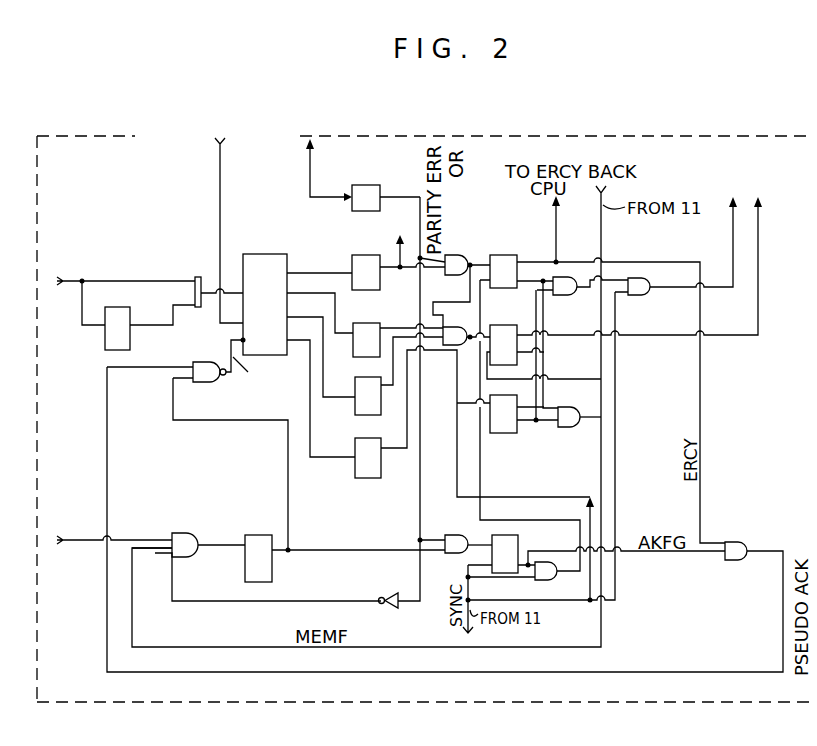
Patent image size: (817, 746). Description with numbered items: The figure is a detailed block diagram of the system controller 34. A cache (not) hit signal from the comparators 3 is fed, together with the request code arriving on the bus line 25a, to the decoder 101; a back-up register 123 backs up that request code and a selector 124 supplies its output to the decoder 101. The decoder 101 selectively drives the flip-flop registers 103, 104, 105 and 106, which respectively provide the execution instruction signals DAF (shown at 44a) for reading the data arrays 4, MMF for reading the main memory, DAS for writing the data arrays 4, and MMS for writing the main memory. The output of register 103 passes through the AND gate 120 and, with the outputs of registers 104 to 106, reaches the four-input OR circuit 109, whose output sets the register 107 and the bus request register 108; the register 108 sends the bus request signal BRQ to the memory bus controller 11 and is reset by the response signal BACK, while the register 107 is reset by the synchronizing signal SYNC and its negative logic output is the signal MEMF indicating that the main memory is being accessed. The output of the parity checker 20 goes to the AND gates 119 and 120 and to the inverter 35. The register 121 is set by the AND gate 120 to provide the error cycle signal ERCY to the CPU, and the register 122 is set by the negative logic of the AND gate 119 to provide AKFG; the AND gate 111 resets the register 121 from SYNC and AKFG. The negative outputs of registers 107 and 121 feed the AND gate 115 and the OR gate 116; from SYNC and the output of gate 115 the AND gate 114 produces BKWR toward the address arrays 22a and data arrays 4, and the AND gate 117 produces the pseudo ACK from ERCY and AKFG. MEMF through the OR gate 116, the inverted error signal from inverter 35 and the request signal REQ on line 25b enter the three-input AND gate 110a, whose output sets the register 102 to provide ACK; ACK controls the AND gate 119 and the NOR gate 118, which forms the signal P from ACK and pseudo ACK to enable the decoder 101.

The comparator 3 is at (219, 218).
The data array 4 is at (725, 221).
The memory bus controller 11 is at (777, 221).
The parity checker 20 is at (372, 185).
The memory write controller 22a is at (720, 171).
The bus line 25a is at (174, 281).
The request line 25b is at (130, 540).
The system controller 34 is at (766, 134).
The inverter 35 is at (388, 593).
The parity error output 44a is at (401, 232).
The decoder 101 is at (258, 254).
The register 102 is at (258, 535).
The register 103 is at (355, 256).
The register 104 is at (370, 323).
The register 105 is at (355, 402).
The register 106 is at (355, 470).
The register 107 is at (508, 433).
The bus request register 108 is at (545, 352).
The OR circuit 109 is at (450, 345).
The AND gate 110a is at (205, 518).
The AND gate 111 is at (552, 580).
The AND gate 114 is at (638, 278).
The AND gate 115 is at (565, 277).
The OR gate 116 is at (568, 427).
The AND gate 117 is at (737, 542).
The NOR gate 118 is at (215, 385).
The AND gate 119 is at (462, 535).
The AND gate 120 is at (455, 255).
The register 121 is at (505, 255).
The register 122 is at (518, 540).
The back-up register 123 is at (105, 342).
The selector 124 is at (199, 307).